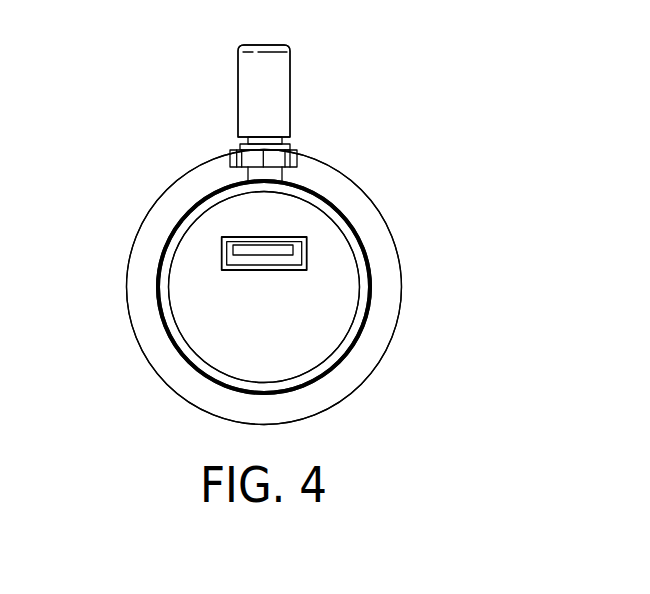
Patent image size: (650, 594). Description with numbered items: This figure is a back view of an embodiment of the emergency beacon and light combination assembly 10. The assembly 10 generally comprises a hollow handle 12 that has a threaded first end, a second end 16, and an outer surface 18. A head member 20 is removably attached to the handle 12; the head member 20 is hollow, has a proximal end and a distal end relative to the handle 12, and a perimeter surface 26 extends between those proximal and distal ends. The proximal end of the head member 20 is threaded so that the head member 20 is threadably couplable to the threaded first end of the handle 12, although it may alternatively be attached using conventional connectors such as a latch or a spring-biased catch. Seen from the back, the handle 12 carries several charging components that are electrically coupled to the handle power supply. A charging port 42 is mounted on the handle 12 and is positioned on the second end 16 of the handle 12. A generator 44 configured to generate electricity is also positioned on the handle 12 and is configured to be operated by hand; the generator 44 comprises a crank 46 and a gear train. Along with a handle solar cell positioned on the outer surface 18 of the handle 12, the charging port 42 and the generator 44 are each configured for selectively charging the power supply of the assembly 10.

The emergency beacon and light combination assembly 10 is at (448, 198).
The handle 12 is at (323, 299).
The second end 16 is at (320, 332).
The outer surface 18 is at (366, 246).
The head member 20 is at (143, 323).
The perimeter surface 26 is at (128, 262).
The charging port 42 is at (275, 253).
The generator 44 is at (278, 76).
The crank 46 is at (252, 86).